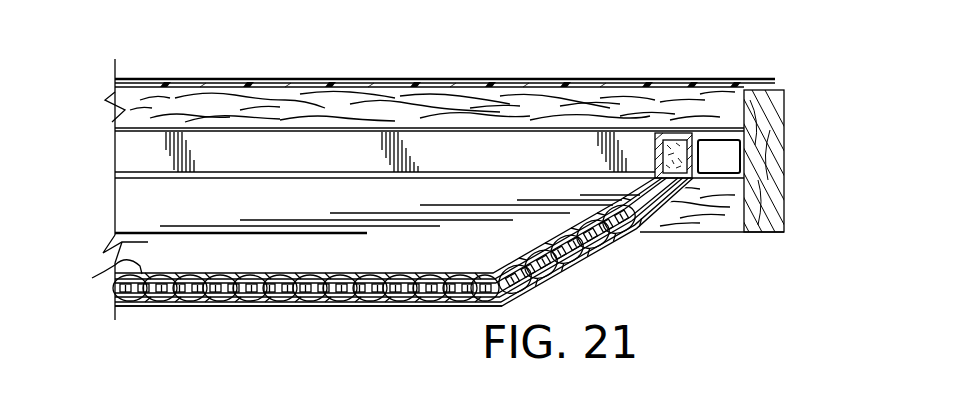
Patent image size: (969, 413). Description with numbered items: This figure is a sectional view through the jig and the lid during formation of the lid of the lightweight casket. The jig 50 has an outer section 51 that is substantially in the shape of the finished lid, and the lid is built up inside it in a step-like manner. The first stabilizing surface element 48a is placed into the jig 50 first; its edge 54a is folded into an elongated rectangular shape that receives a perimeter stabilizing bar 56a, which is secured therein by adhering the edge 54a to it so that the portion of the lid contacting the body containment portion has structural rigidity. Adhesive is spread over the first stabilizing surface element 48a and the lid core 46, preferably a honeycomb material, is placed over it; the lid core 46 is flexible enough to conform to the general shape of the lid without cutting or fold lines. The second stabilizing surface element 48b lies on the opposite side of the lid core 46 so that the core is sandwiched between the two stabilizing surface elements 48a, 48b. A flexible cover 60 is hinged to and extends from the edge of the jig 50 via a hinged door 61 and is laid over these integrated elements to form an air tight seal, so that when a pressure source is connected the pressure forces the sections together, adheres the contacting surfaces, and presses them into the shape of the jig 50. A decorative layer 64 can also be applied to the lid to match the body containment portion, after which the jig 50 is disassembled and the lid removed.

The flexible cover 60 is at (500, 86).
The perimeter stabilizing bar 56a is at (681, 140).
The hinged door 61 is at (768, 106).
The edge 54a is at (706, 156).
The jig 50 is at (728, 205).
The decorative layer 64 is at (602, 252).
The first stabilizing surface element 48a is at (212, 302).
The lid core 46 is at (310, 302).
The outer section 51 is at (376, 306).
The second stabilizing surface element 48b is at (102, 284).